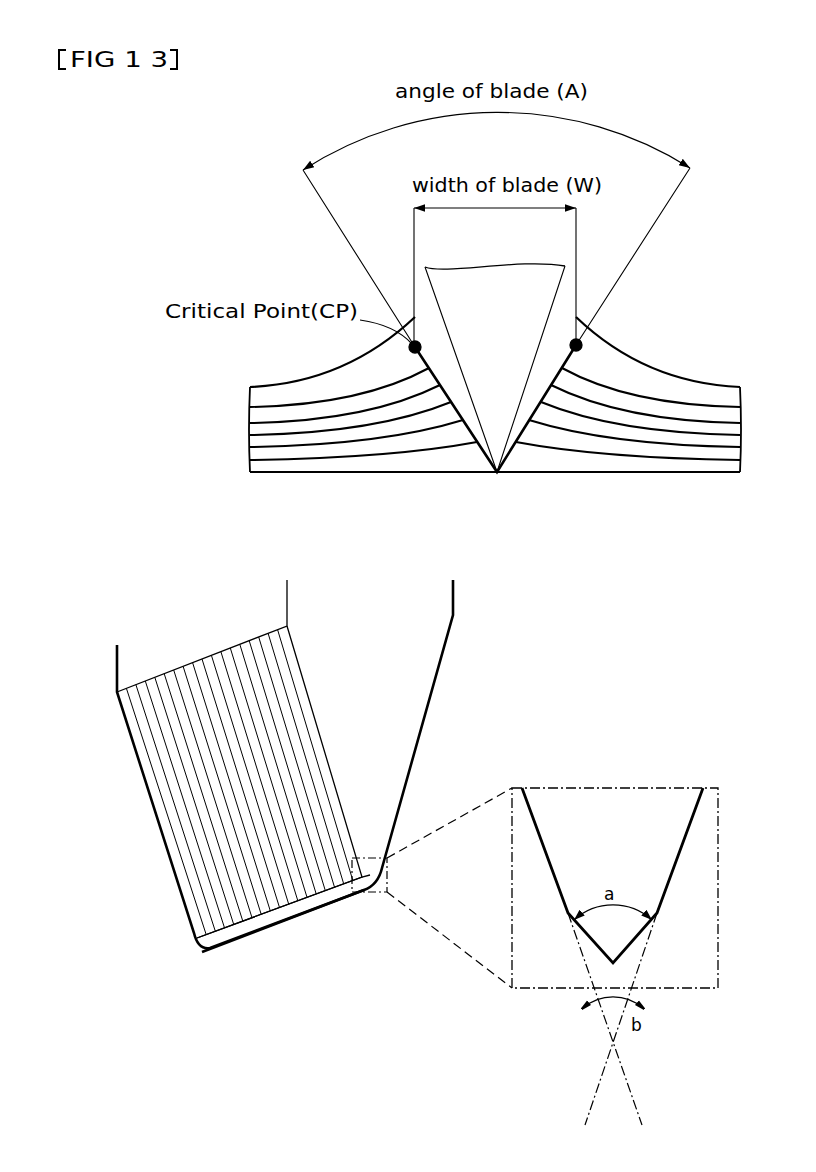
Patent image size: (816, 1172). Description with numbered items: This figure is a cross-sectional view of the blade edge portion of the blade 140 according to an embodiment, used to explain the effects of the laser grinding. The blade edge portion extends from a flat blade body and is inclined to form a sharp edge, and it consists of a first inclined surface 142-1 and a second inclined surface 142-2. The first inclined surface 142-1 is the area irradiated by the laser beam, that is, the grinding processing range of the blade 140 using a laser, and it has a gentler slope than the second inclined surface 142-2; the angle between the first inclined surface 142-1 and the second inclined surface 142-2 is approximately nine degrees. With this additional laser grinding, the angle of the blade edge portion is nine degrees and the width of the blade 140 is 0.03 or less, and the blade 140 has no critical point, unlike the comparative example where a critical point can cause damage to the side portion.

The blade 140 is at (128, 663).
The first inclined surface 142-1 is at (196, 946).
The second inclined surface 142-2 is at (193, 804).